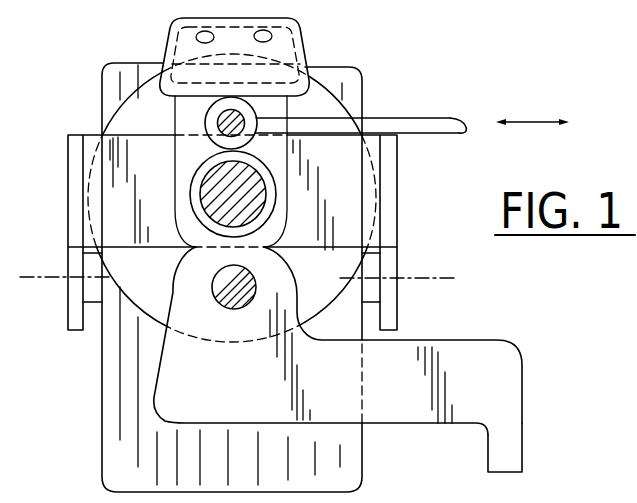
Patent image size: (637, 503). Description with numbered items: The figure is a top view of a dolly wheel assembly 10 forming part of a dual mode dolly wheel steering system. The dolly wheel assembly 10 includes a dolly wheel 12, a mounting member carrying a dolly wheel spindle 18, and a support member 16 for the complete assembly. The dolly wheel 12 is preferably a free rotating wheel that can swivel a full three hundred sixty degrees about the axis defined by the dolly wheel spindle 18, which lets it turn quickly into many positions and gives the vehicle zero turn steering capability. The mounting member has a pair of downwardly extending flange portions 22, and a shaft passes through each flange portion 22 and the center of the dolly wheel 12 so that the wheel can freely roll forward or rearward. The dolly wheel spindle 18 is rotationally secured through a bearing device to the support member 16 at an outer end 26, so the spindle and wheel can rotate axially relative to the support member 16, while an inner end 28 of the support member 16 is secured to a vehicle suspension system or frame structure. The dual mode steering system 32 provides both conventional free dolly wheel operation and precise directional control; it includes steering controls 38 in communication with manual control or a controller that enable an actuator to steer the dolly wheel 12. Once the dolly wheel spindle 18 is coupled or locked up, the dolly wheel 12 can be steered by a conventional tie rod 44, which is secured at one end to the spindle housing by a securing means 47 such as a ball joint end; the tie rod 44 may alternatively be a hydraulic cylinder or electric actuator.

The dolly wheel assembly 10 is at (387, 56).
The dolly wheel 12 is at (352, 468).
The support member 16 is at (413, 347).
The dolly wheel spindle 18 is at (262, 197).
The flange portions 22 is at (72, 218).
The outer end 26 is at (174, 316).
The inner end 28 is at (507, 447).
The dual mode steering system 32 is at (418, 162).
The steering controls 38 is at (400, 108).
The tie rod 44 is at (430, 117).
The securing means 47 is at (246, 104).